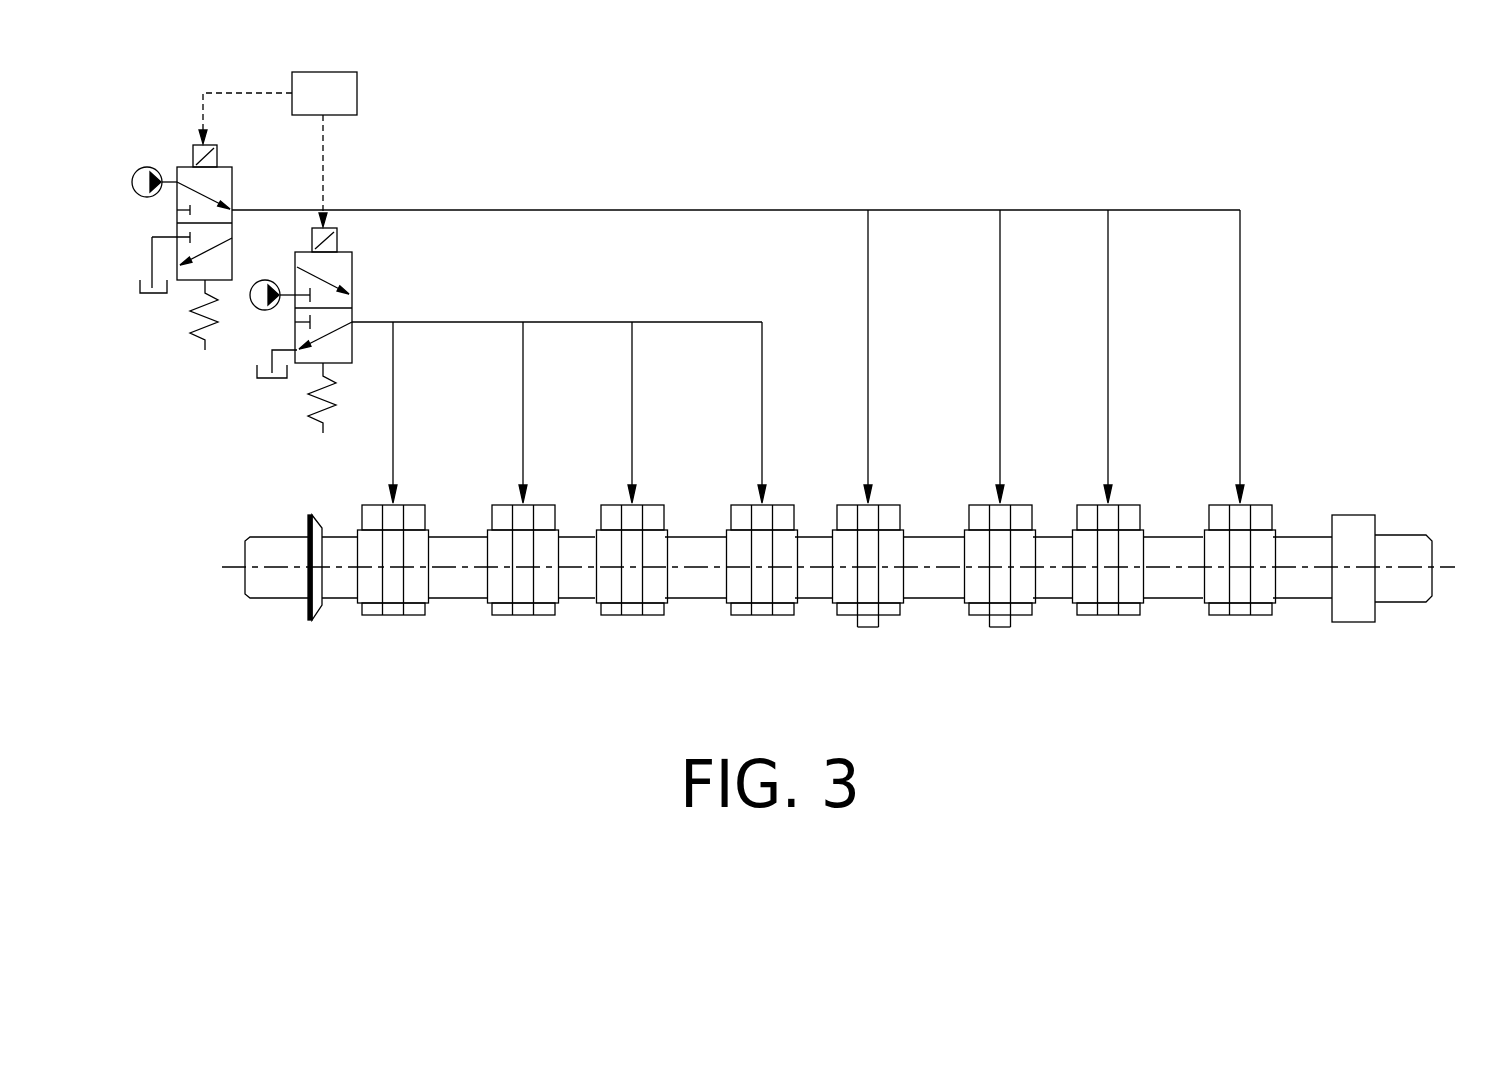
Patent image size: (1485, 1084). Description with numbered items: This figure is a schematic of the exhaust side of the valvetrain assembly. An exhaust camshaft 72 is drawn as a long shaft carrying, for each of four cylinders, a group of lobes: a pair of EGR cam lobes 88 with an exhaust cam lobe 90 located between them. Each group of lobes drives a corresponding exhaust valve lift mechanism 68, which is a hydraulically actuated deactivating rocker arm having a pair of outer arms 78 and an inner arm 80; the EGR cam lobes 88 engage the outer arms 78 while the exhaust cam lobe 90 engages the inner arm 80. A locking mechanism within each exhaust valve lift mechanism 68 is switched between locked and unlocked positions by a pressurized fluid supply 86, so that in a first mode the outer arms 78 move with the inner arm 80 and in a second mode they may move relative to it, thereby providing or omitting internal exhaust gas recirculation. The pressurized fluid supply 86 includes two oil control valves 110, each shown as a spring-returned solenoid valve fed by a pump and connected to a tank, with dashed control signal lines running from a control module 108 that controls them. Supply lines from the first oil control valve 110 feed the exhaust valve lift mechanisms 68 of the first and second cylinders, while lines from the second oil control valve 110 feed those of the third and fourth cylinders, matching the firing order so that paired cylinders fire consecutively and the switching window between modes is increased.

The exhaust valve lift mechanisms 68 is at (806, 452).
The exhaust camshaft 72 is at (1318, 467).
The outer arms 78 is at (819, 481).
The inner arm 80 is at (812, 548).
The pressurized fluid supply 86 is at (146, 144).
The EGR cam lobes 88 is at (815, 561).
The exhaust cam lobes 90 is at (834, 443).
The control module 108 is at (307, 105).
The oil control valves 110 is at (233, 184).